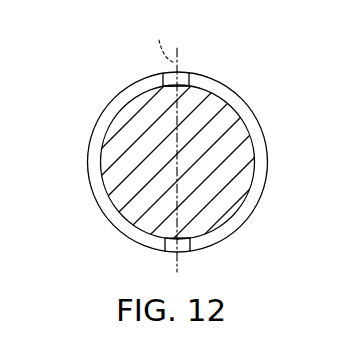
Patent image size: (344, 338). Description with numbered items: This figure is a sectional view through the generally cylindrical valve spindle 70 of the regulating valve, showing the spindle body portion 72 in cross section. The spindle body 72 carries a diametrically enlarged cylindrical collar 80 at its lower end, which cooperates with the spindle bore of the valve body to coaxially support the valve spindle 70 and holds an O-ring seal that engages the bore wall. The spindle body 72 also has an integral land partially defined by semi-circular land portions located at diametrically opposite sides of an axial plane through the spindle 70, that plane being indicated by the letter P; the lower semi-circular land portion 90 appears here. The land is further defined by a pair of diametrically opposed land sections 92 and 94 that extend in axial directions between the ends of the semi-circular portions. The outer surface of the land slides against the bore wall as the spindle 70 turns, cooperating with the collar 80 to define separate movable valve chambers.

The valve spindle 70 is at (228, 74).
The body portion 72 is at (113, 211).
The collar 80 is at (85, 150).
The lower semi-circular land portion 90 is at (262, 197).
The land section 92 is at (192, 253).
The land section 94 is at (166, 75).